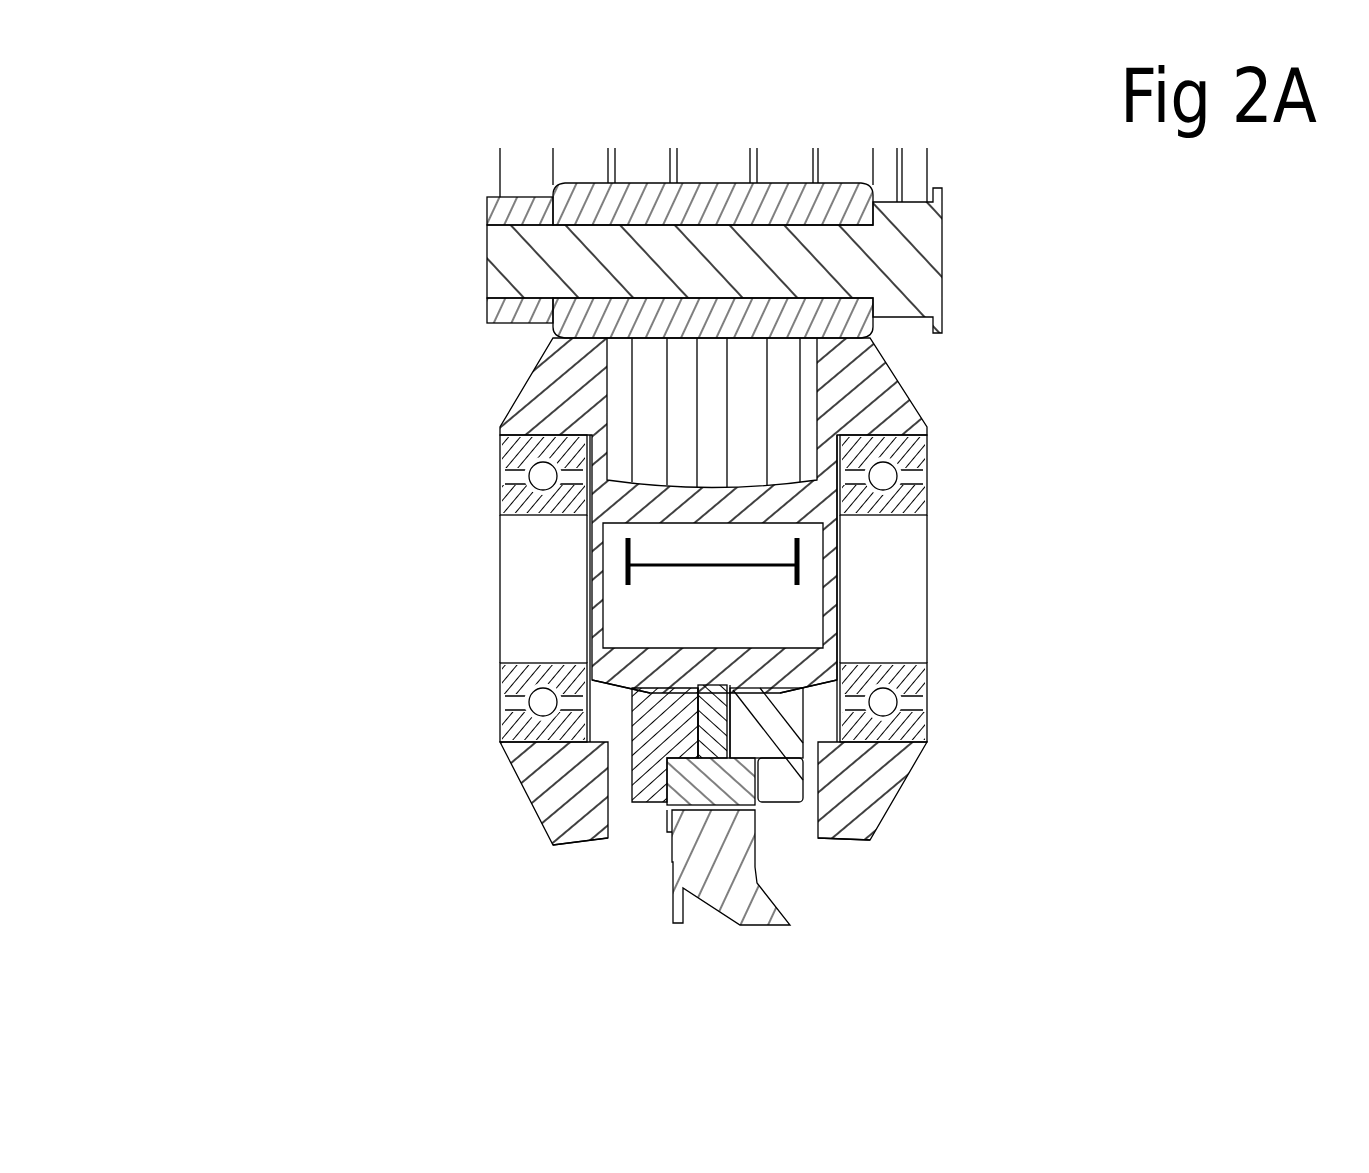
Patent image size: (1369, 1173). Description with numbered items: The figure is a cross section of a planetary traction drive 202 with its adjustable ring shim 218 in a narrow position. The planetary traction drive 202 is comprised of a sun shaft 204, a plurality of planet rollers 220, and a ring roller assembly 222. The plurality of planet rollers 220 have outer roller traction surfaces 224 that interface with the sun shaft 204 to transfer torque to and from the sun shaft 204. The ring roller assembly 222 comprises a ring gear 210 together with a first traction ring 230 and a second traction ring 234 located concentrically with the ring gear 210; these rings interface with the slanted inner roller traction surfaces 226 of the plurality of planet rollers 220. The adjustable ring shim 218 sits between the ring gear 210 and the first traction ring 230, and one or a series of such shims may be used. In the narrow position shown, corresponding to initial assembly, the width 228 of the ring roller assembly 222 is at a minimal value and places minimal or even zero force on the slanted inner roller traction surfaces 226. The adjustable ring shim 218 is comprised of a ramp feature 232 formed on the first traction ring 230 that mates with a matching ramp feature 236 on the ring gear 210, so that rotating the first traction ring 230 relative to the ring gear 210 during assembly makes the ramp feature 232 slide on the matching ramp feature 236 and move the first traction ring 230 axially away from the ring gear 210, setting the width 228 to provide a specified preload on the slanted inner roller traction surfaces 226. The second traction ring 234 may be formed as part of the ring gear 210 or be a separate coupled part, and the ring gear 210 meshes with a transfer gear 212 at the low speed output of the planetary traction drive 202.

The planetary traction drive 202 is at (266, 240).
The sun shaft 204 is at (540, 253).
The ring gear 210 is at (700, 786).
The transfer gear 212 is at (700, 905).
The adjustable ring shim 218 is at (686, 712).
The plurality of planet rollers 220 is at (898, 160).
The ring roller assembly 222 is at (790, 809).
The outer roller traction surfaces 224 is at (847, 843).
The slanted inner roller traction surfaces 226 is at (777, 690).
The width 228 is at (783, 560).
The first traction ring 230 is at (695, 757).
The ramp feature 232 is at (678, 736).
The second traction ring 234 is at (777, 720).
The matching ramp feature 236 is at (706, 735).